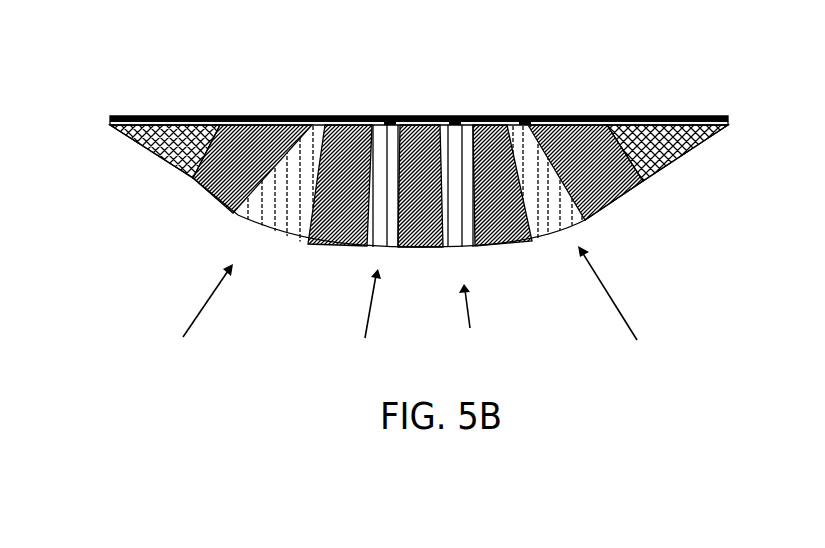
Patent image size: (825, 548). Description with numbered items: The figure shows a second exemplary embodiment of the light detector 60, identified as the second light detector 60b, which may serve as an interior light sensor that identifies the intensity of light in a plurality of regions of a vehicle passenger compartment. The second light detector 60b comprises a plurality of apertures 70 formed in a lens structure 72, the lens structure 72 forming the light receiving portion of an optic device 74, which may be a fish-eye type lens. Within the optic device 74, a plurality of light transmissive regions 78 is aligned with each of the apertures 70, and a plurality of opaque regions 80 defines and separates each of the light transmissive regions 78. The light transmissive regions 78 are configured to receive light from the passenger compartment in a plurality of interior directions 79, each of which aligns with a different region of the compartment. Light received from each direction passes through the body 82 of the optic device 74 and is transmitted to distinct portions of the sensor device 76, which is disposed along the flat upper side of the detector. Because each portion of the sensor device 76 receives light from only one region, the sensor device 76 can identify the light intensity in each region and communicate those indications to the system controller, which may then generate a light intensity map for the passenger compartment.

The light detector 60 is at (419, 146).
The second light detector 60b is at (614, 78).
The apertures 70 is at (460, 243).
The lens structure 72 is at (709, 165).
The optic device 74 is at (164, 161).
The sensor device 76 is at (390, 118).
The light transmissive regions 78 is at (277, 218).
The interior directions 79 is at (363, 320).
The opaque regions 80 is at (625, 200).
The body 82 is at (170, 155).